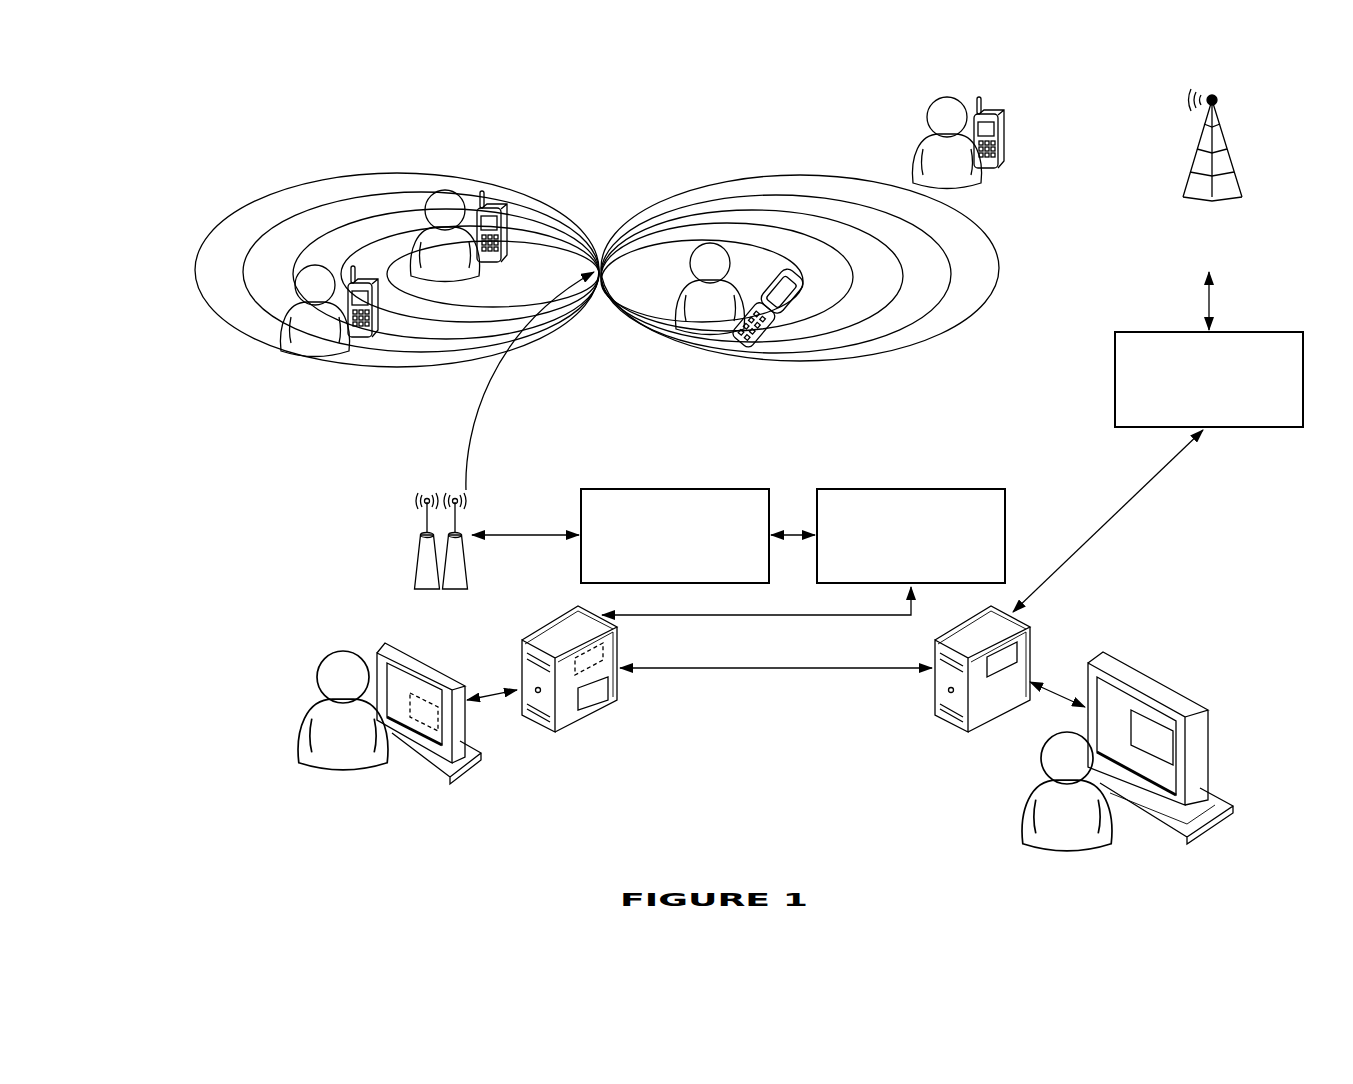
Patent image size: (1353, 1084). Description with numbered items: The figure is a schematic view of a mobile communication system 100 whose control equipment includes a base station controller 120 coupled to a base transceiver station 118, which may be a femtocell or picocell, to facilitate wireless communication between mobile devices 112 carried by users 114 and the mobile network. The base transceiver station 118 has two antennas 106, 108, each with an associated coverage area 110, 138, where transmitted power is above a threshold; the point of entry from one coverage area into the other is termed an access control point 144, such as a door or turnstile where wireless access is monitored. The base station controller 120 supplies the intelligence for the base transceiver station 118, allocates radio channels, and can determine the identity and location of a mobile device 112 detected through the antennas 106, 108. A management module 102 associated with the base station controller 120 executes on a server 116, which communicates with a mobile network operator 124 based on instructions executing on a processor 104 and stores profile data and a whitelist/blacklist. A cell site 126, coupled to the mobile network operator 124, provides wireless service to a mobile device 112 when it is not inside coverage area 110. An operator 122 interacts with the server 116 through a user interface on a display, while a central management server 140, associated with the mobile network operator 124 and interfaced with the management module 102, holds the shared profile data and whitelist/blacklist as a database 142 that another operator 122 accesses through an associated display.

The mobile communication system 100 is at (314, 858).
The management module 102 is at (592, 665).
The processor 104 is at (590, 700).
The antenna 106 is at (410, 562).
The antenna 108 is at (458, 589).
The coverage area 110 is at (240, 333).
The mobile device 112 is at (380, 337).
The user 114 is at (320, 350).
The server 116 is at (629, 683).
The base transceiver station 118 is at (675, 536).
The base station controller 120 is at (911, 536).
The operator 122 is at (345, 755).
The mobile network operator 124 is at (473, 772).
The cell site 126 is at (1212, 200).
The coverage area 138 is at (963, 327).
The central management server 140 is at (1019, 704).
The database 142 is at (1015, 653).
The access control point 144 is at (602, 262).